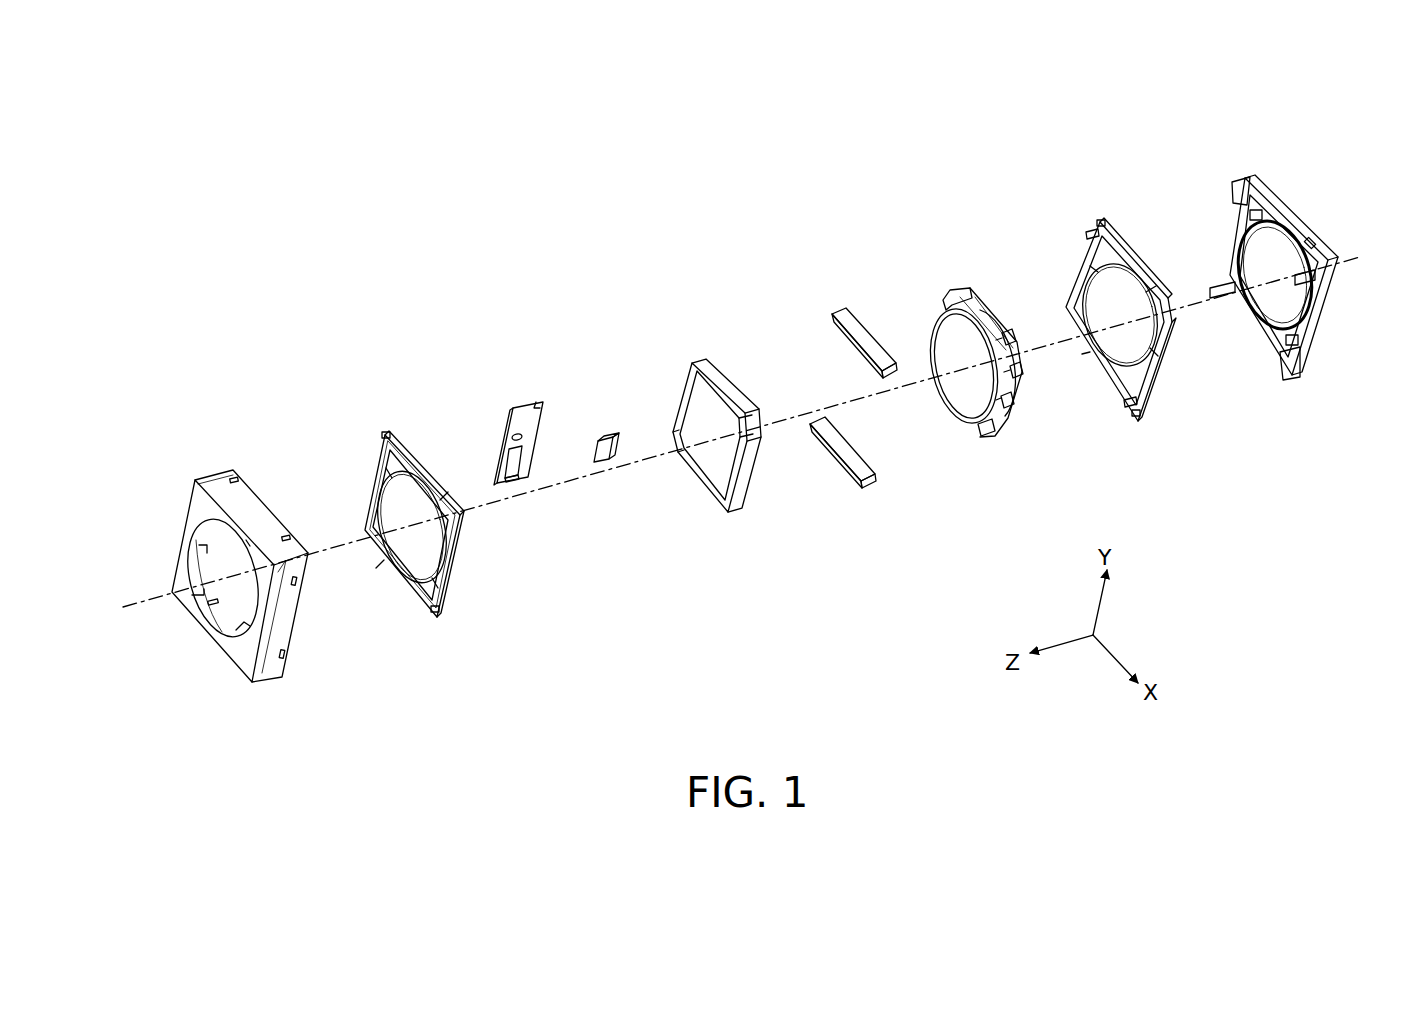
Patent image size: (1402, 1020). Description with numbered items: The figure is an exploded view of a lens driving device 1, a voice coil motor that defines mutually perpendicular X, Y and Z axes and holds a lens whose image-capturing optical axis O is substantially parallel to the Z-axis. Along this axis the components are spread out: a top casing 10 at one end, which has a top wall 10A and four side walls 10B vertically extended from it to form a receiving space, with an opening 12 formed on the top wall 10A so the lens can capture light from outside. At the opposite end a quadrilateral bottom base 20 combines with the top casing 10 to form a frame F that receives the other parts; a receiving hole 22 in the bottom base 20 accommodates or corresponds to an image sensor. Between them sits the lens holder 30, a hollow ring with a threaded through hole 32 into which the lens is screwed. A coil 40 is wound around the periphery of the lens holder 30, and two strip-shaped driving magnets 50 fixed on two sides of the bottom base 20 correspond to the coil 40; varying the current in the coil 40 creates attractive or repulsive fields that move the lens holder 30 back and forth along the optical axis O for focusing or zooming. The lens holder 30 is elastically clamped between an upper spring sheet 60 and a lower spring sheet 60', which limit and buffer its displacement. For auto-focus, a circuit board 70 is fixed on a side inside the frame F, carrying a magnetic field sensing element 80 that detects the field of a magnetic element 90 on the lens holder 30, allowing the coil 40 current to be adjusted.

The lens driving device 1 is at (303, 141).
The frame F is at (505, 97).
The top casing 10 is at (222, 554).
The top wall 10A is at (248, 655).
The side walls 10B is at (255, 512).
The opening 12 is at (212, 548).
The bottom base 20 is at (1267, 251).
The receiving hole 22 is at (1283, 303).
The lens holder 30 is at (964, 342).
The through hole 32 is at (980, 385).
The coil 40 is at (697, 355).
The driving magnets 50 is at (845, 318).
The upper spring sheet 60 is at (411, 484).
The lower spring sheet 60' is at (1121, 281).
The circuit board 70 is at (523, 420).
The magnetic field sensing element 80 is at (512, 458).
The magnetic element 90 is at (610, 436).
The image-capturing optical axis O is at (1357, 257).